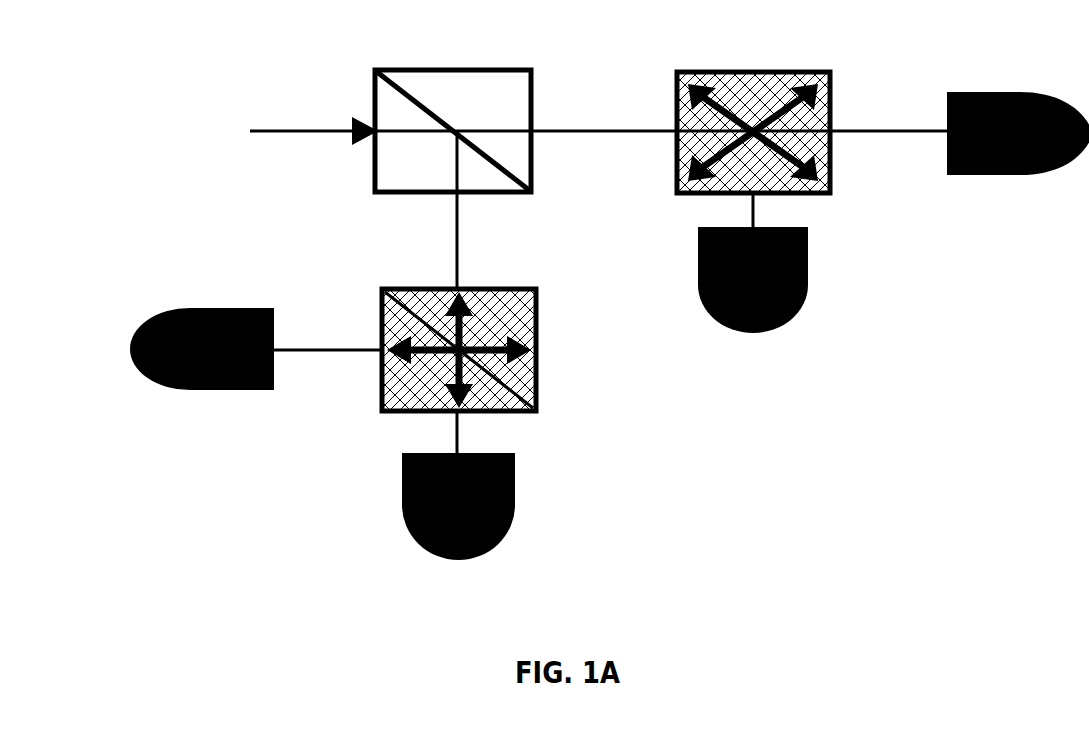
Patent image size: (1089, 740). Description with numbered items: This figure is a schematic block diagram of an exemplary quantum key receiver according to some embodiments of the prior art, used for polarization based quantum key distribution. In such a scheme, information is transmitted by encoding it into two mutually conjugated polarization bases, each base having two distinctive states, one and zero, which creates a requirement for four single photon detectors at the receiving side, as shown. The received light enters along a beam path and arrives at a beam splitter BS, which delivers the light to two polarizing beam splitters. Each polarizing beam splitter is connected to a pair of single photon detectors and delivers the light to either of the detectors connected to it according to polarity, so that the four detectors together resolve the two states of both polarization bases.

The beam splitter BS is at (453, 112).